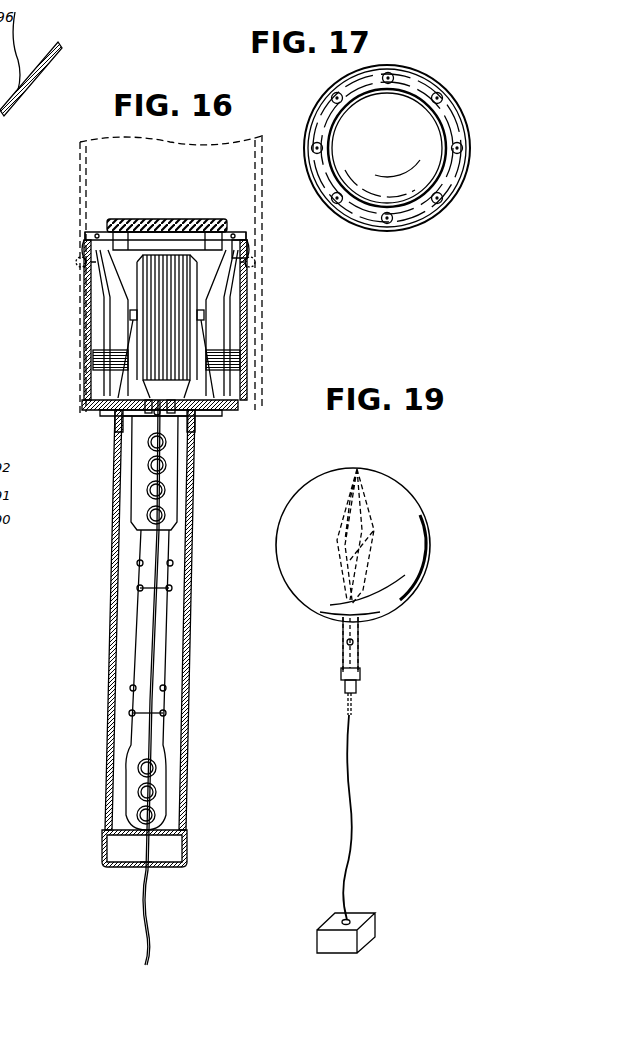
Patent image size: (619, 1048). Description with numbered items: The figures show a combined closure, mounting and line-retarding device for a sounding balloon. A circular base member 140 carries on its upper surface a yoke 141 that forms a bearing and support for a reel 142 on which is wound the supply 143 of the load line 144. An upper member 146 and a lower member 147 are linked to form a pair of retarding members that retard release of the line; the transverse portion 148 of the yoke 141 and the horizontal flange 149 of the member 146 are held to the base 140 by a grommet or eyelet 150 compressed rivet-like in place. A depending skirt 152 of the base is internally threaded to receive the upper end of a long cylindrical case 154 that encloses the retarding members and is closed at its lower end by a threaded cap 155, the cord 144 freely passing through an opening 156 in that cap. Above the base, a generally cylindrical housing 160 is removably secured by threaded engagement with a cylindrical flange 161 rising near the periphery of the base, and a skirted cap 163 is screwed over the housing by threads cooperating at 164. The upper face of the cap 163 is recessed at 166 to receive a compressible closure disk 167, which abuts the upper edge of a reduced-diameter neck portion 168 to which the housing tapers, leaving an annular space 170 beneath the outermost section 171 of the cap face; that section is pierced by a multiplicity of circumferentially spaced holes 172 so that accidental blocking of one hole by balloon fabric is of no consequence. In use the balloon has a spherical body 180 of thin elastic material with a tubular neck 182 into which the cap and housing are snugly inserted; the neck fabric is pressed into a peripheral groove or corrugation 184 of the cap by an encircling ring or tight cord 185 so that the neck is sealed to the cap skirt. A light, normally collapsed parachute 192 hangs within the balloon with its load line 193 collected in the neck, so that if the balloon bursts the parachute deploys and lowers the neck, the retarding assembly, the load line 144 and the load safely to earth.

In FIG. 16, the circular base member 140 is at (216, 413).
In FIG. 16, the yoke 141 is at (240, 388).
In FIG. 16, the reel 142 is at (192, 262).
In FIG. 16, the supply of load line 143 is at (160, 222).
In FIG. 16, the load line 144 is at (142, 402).
In FIG. 19, the load line 144 is at (350, 836).
In FIG. 16, the upper member 146 is at (172, 500).
In FIG. 16, the lower member 147 is at (140, 742).
In FIG. 16, the transverse portion of the yoke 148 is at (165, 399).
In FIG. 16, the horizontal flange 149 is at (122, 422).
In FIG. 16, the grommet or eyelet 150 is at (170, 414).
In FIG. 16, the depending skirt 152 is at (198, 420).
In FIG. 16, the cylindrical case 154 is at (190, 796).
In FIG. 19, the cylindrical case 154 is at (351, 712).
In FIG. 16, the threaded cap 155 is at (104, 866).
In FIG. 16, the opening in the cap 156 is at (148, 868).
In FIG. 16, the cylindrical housing 160 is at (240, 362).
In FIG. 19, the cylindrical housing 160 is at (357, 686).
In FIG. 16, the cylindrical flange 161 is at (240, 402).
In FIG. 16, the skirted cap 163 is at (232, 246).
In FIG. 17, the skirted cap 163 is at (360, 222).
In FIG. 19, the skirted cap 163 is at (362, 675).
In FIG. 16, the threads 164 is at (245, 322).
In FIG. 16, the upwardly recessed region 166 is at (176, 221).
In FIG. 17, the upwardly recessed region 166 is at (406, 103).
In FIG. 16, the closure disk 167 is at (196, 229).
In FIG. 16, the neck portion 168 is at (84, 238).
In FIG. 16, the annular space 170 is at (248, 260).
In FIG. 16, the outermost section of the cap face 171 is at (238, 236).
In FIG. 17, the outermost section of the cap face 171 is at (324, 116).
In FIG. 16, the holes 172 is at (97, 231).
In FIG. 17, the holes 172 is at (390, 72).
In FIG. 19, the spherical body 180 is at (402, 504).
In FIG. 16, the tubular neck 182 is at (78, 154).
In FIG. 19, the tubular neck 182 is at (360, 628).
In FIG. 16, the peripheral groove or corrugation 184 is at (79, 252).
In FIG. 16, the encircling member 185 is at (78, 263).
In FIG. 19, the parachute 192 is at (362, 495).
In FIG. 19, the load line of the parachute 193 is at (322, 617).